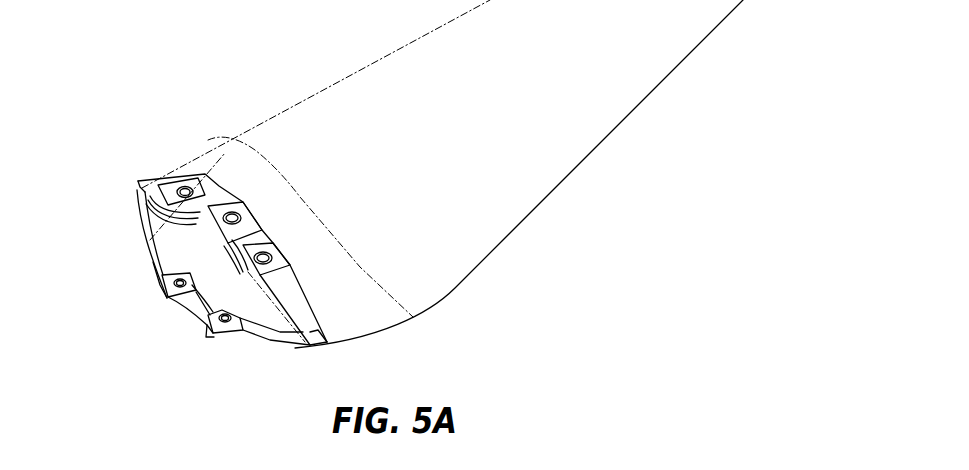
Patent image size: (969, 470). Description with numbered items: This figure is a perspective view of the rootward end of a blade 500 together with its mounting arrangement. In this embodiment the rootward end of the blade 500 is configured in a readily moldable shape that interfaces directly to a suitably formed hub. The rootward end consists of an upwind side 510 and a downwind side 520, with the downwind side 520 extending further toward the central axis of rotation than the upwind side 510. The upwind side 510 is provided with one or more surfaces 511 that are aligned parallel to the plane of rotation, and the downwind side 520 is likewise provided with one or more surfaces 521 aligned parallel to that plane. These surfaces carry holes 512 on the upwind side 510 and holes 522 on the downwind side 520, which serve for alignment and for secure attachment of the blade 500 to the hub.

The blade 500 is at (363, 63).
The upwind side 510 is at (182, 210).
The surfaces 511 is at (242, 215).
The holes 512 is at (185, 190).
The downwind side 520 is at (171, 299).
The surfaces 521 is at (208, 332).
The holes 522 is at (180, 281).